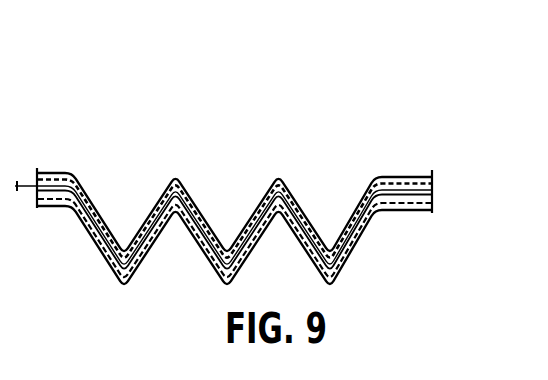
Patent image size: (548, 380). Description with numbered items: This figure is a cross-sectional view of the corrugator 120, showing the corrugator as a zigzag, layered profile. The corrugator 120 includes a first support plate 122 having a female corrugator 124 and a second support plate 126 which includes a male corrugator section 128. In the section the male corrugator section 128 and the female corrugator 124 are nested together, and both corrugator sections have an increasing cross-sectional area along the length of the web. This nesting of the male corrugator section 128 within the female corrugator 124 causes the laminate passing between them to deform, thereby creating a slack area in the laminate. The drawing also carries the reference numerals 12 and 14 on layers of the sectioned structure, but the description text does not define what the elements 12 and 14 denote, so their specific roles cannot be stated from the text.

The corrugator 120 is at (337, 148).
The first layer 12 is at (290, 198).
The second layer 14 is at (358, 243).
The first support plate 122 is at (96, 256).
The female corrugator 124 is at (121, 288).
The second support plate 126 is at (83, 181).
The male corrugator section 128 is at (200, 212).